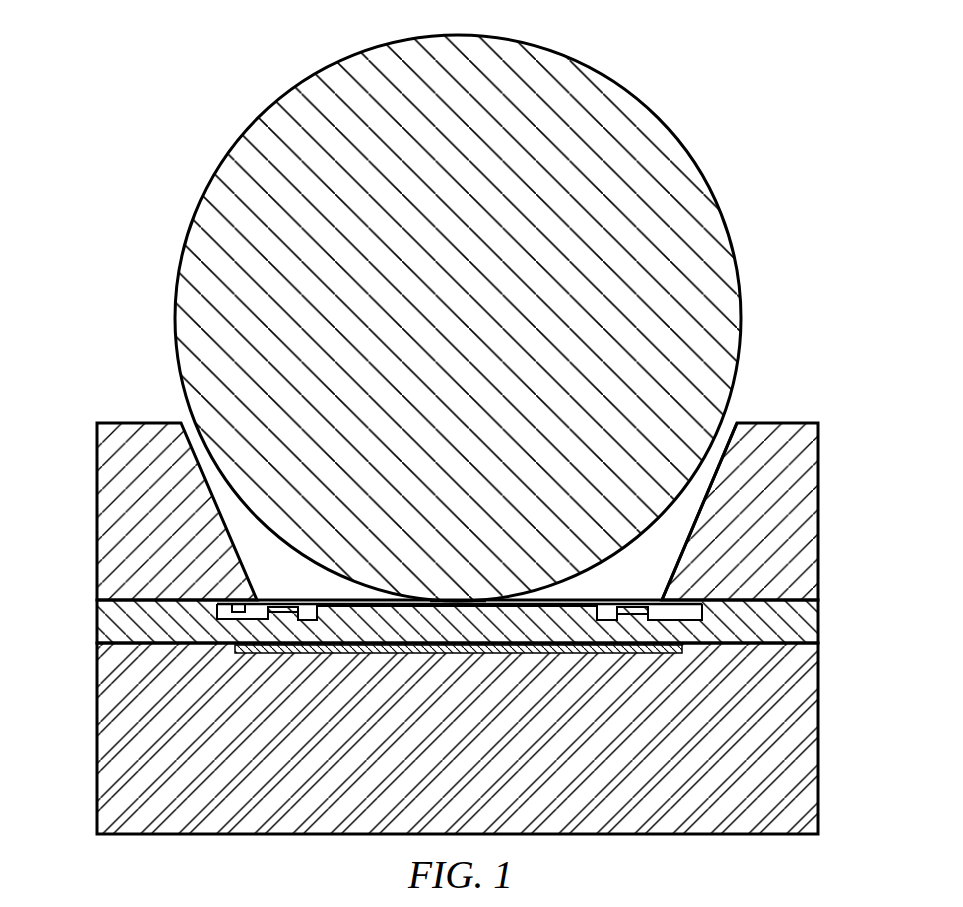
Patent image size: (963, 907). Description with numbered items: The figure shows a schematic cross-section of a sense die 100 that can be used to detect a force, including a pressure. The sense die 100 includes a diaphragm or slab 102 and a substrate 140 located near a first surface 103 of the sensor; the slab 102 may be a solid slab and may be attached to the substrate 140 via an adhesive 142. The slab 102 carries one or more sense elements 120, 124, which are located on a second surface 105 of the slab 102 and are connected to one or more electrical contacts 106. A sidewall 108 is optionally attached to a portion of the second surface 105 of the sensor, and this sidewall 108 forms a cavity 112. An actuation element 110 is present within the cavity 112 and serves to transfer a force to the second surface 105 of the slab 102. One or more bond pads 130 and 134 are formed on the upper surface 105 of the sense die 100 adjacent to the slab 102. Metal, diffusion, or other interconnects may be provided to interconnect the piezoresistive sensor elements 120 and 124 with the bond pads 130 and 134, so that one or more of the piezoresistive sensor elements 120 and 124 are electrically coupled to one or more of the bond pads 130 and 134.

The sense die 100 is at (145, 278).
The slab 102 is at (437, 597).
The first surface 103 is at (443, 652).
The second surface 105 is at (573, 600).
The electrical contacts 106 is at (233, 600).
The sidewall 108 is at (128, 516).
The actuation element 110 is at (234, 146).
The cavity 112 is at (687, 542).
The sense element 120 is at (318, 621).
The sense element 124 is at (598, 621).
The bond pad 130 is at (217, 621).
The bond pad 134 is at (675, 621).
The substrate 140 is at (125, 727).
The adhesive 142 is at (270, 646).